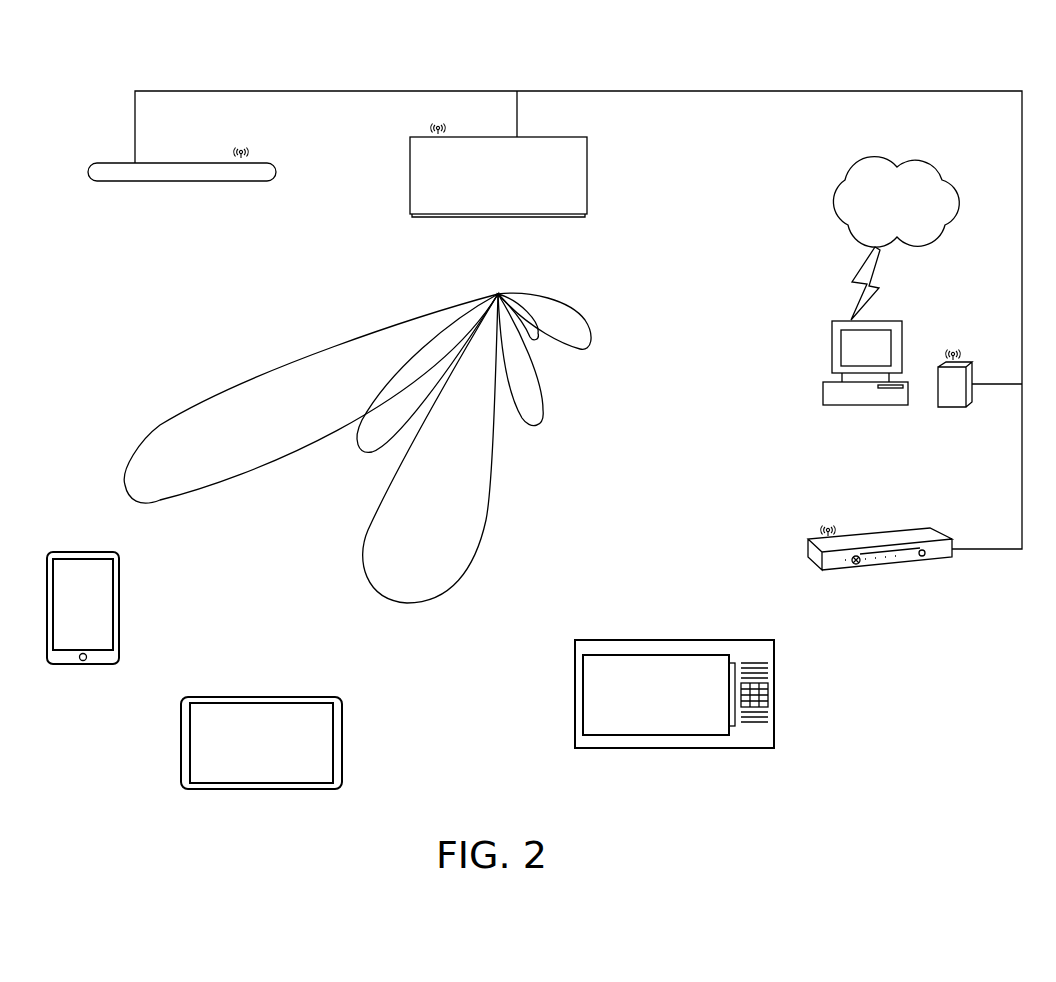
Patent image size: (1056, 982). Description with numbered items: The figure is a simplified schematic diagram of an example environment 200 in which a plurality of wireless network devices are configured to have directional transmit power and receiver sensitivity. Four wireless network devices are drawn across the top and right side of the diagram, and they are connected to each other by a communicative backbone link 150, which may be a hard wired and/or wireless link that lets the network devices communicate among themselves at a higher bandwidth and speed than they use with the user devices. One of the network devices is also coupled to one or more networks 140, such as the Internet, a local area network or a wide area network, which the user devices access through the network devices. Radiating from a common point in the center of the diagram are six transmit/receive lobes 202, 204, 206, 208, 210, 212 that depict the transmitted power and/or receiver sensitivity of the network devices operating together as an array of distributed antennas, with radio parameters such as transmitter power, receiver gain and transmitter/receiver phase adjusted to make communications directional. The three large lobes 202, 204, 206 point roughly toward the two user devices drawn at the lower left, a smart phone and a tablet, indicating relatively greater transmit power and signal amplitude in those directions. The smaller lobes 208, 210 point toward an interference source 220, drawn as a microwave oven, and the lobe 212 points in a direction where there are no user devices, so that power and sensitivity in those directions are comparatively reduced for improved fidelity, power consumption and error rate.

The example environment 200 is at (977, 32).
The communicative backbone link 150 is at (134, 127).
The network 140 is at (862, 163).
The transmit/receive lobe 202 is at (150, 427).
The transmit/receive lobe 204 is at (355, 452).
The transmit/receive lobe 206 is at (360, 565).
The transmit/receive lobe 208 is at (540, 427).
The transmit/receive lobe 210 is at (540, 337).
The transmit/receive lobe 212 is at (588, 318).
The interference source 220 is at (575, 692).